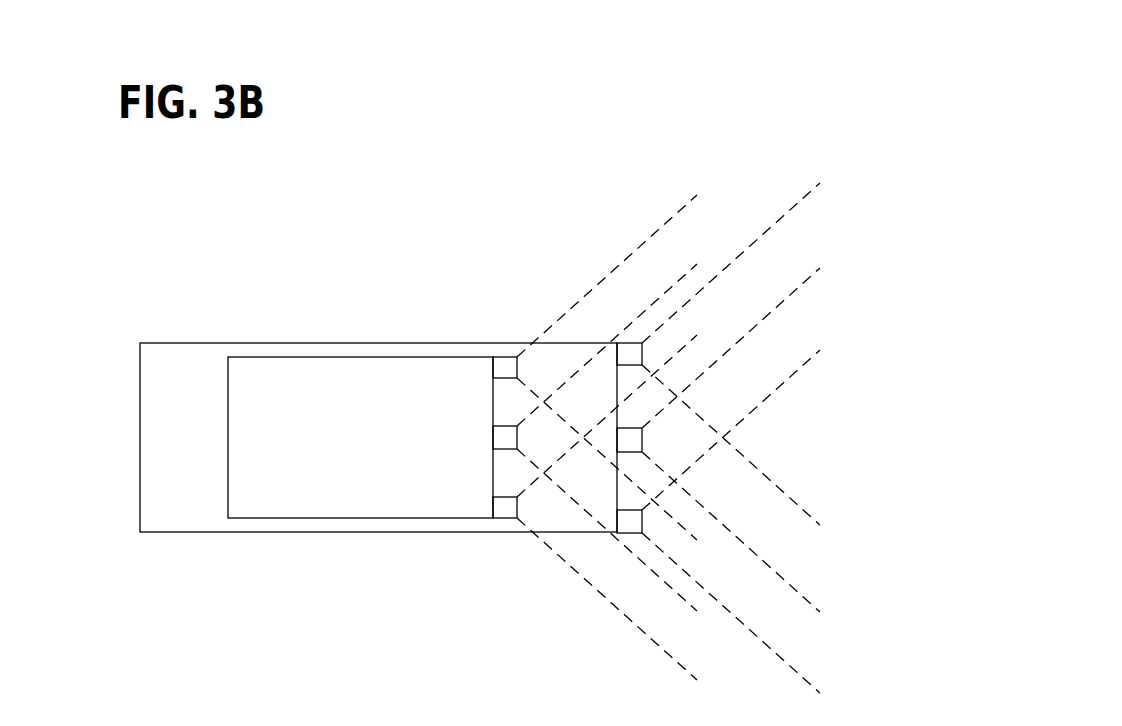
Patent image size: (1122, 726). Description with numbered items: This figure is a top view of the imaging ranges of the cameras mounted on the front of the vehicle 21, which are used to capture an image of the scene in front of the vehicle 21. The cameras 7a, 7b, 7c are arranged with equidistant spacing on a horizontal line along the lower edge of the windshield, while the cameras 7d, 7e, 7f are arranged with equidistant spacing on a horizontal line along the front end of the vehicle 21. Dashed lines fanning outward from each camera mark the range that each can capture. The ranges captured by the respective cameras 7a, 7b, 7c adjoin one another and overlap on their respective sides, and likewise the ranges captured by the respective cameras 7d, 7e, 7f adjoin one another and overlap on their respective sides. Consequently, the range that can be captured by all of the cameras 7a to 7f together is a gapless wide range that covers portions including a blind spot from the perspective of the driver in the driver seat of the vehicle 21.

The vehicle 21 is at (351, 343).
The camera 7a is at (505, 517).
The camera 7b is at (505, 435).
The camera 7c is at (500, 363).
The camera 7d is at (628, 527).
The camera 7e is at (633, 437).
The camera 7f is at (633, 357).